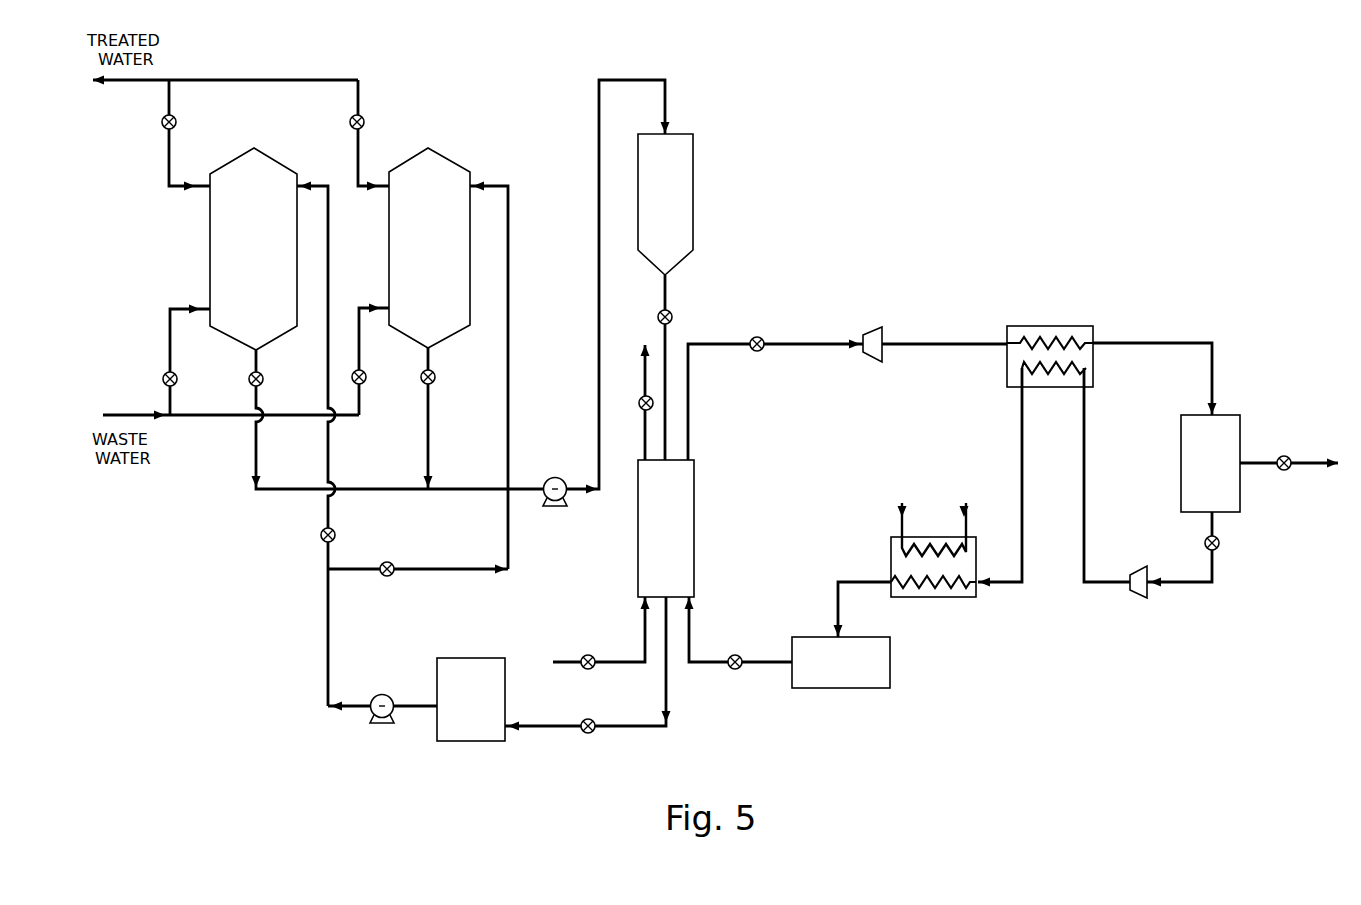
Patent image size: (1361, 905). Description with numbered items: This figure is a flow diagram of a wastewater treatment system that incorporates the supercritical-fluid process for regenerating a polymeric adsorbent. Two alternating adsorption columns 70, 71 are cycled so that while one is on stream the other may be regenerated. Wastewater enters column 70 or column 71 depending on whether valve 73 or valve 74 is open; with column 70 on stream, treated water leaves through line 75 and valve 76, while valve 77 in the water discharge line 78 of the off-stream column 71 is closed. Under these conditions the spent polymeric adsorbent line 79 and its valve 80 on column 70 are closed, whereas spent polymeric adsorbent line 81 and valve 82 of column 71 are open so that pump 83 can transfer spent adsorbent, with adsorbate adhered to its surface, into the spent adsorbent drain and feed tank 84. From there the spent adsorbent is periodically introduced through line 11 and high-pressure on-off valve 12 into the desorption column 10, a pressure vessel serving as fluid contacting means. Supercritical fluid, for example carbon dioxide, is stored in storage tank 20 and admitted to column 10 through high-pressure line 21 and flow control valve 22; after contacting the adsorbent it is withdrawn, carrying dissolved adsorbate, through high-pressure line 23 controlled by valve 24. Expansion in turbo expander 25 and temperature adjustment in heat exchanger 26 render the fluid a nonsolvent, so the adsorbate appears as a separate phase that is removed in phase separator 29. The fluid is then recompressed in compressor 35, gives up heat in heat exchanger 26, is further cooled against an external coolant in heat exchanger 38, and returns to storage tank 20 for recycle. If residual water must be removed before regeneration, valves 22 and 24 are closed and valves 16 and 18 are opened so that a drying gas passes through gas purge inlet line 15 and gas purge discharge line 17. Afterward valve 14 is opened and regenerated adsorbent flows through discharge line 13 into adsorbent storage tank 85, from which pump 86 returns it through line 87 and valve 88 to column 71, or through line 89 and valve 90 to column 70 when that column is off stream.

The desorption column 10 is at (683, 549).
The line 11 is at (670, 340).
The high-pressure on-off valve 12 is at (672, 311).
The regenerated adsorbent discharge line 13 is at (650, 730).
The high-pressure valve 14 is at (594, 735).
The gas purge inlet line 15 is at (632, 655).
The high-pressure valve 16 is at (580, 655).
The gas purge discharge line 17 is at (644, 437).
The high-pressure valve 18 is at (640, 397).
The storage tank 20 is at (838, 690).
The high-pressure line 21 is at (692, 650).
The high-pressure fluid flow control valve 22 is at (740, 652).
The high-pressure line 23 is at (710, 338).
The high-pressure on-off valve 24 is at (764, 335).
The turbo expander 25 is at (880, 325).
The heat exchanger 26 is at (1022, 332).
The phase separator 29 is at (1230, 437).
The compressor 35 is at (1140, 590).
The heat exchanger 38 is at (927, 597).
The adsorption column 70 is at (263, 258).
The adsorption column 71 is at (441, 255).
The valve 73 is at (163, 373).
The valve 74 is at (366, 370).
The line 75 is at (176, 146).
The valve 76 is at (177, 115).
The valve 77 is at (364, 115).
The water discharge line 78 is at (364, 146).
The spent polymeric adsorbent line 79 is at (252, 467).
The valve 80 is at (249, 373).
The spent polymeric adsorbent line 81 is at (432, 357).
The valve 82 is at (436, 383).
The pump 83 is at (548, 478).
The spent adsorbent drain and feed tank 84 is at (680, 196).
The adsorbent storage tank 85 is at (467, 728).
The pump 86 is at (378, 682).
The line 87 is at (460, 575).
The valve 88 is at (393, 577).
The line 89 is at (324, 508).
The valve 90 is at (320, 538).